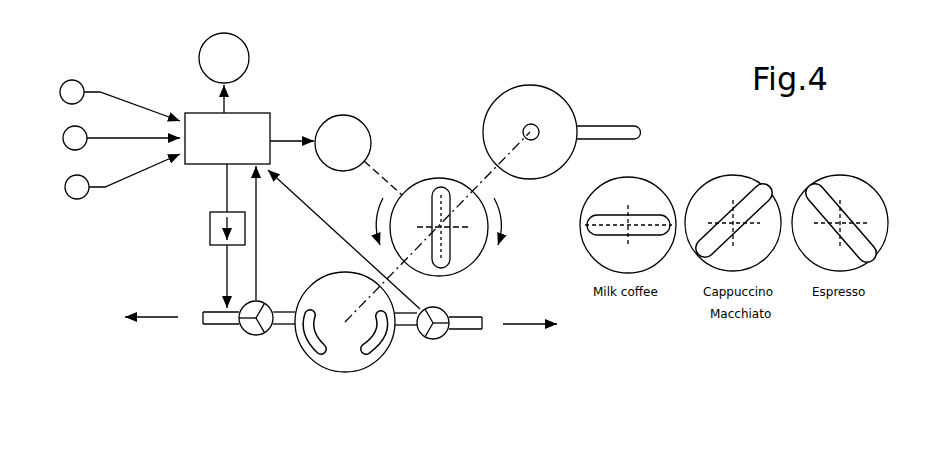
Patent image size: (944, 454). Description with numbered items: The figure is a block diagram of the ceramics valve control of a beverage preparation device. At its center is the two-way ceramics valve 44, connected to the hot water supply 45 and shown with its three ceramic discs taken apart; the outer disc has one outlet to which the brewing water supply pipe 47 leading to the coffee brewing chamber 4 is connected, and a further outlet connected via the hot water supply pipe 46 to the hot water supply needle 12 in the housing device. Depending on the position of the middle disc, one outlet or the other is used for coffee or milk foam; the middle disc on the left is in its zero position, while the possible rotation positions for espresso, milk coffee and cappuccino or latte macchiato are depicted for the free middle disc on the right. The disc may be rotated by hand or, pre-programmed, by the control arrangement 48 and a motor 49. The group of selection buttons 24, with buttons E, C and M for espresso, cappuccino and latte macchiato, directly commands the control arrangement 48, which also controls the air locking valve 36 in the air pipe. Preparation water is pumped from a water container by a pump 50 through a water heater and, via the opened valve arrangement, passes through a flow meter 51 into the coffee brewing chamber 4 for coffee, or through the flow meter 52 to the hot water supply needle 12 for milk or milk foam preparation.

The coffee brewing chamber 4 is at (134, 322).
The hot water supply needle 12 is at (553, 325).
The group of selection buttons 24 is at (50, 197).
The air locking valve 36 is at (205, 244).
The two-way ceramics valve 44 is at (425, 150).
The hot water supply 45 is at (665, 136).
The hot water supply pipe 46 is at (482, 326).
The brewing water supply pipe 47 is at (212, 325).
The control arrangement 48 is at (245, 116).
The motor 49 is at (344, 114).
The pump 50 is at (197, 55).
The flow meter 51 is at (250, 338).
The flow meter 52 is at (443, 340).